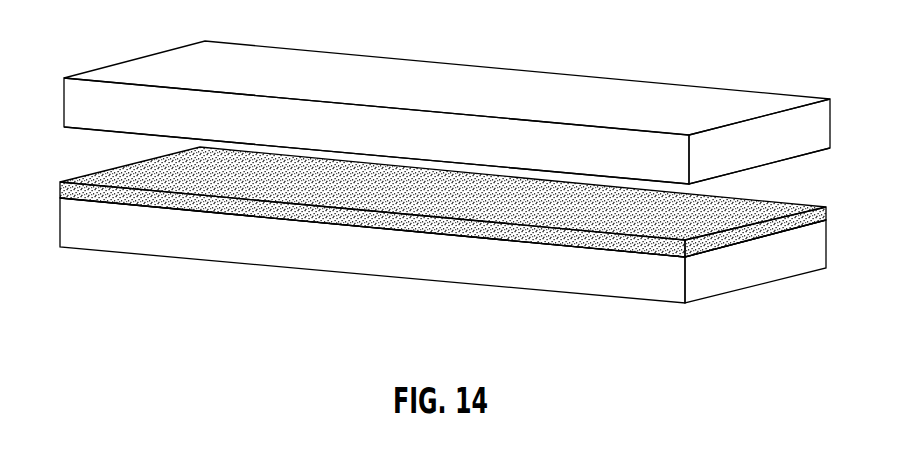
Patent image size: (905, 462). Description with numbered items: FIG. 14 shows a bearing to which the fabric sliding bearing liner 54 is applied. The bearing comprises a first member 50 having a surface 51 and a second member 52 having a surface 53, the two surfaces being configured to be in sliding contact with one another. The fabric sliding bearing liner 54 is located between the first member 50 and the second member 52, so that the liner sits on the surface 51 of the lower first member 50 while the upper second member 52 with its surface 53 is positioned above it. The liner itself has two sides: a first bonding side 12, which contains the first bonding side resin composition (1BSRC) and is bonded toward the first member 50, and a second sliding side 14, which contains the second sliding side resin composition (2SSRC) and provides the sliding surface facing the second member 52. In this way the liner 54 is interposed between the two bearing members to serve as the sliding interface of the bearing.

The first bonding side 12 is at (183, 201).
The second sliding side 14 is at (781, 201).
The first member 50 is at (430, 264).
The surface 51 is at (276, 232).
The second member 52 is at (478, 75).
The surface 53 is at (92, 137).
The fabric sliding bearing liner 54 is at (517, 205).